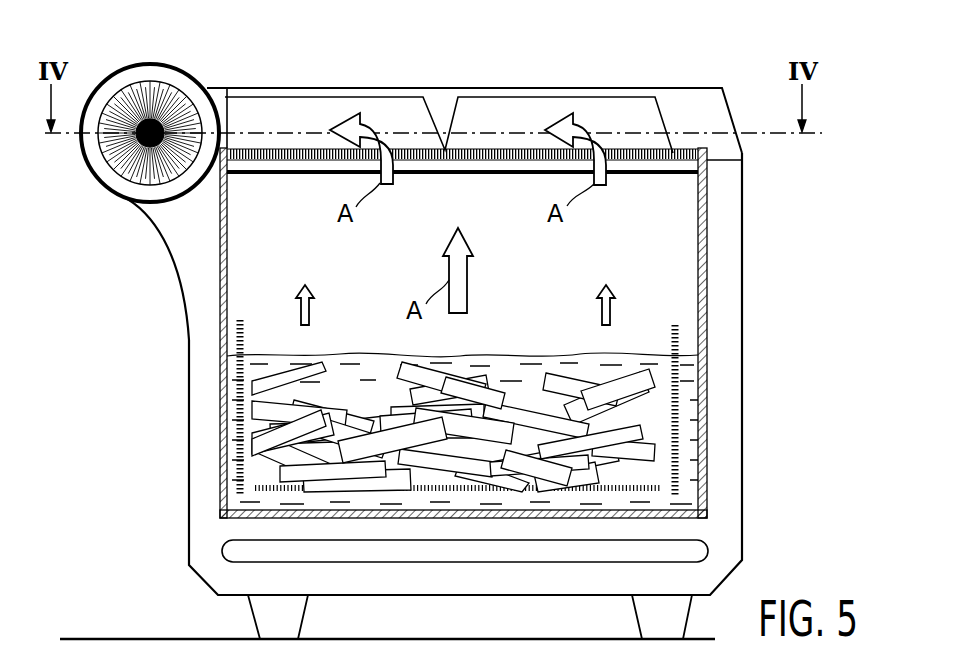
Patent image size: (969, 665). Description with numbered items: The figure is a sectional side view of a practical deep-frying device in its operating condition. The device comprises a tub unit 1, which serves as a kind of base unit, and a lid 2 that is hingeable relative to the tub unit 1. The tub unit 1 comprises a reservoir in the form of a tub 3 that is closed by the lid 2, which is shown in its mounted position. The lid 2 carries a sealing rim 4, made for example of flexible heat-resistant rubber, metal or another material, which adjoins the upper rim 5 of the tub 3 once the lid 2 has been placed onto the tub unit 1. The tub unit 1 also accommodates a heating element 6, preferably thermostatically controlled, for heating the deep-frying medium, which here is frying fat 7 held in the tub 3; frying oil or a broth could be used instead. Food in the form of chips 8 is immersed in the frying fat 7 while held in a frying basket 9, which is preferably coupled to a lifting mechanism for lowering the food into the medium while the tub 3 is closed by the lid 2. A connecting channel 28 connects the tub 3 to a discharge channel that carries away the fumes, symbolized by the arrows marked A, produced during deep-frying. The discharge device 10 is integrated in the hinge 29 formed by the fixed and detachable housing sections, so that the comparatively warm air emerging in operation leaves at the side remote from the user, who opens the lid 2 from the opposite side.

The tub unit 1 is at (760, 330).
The lid 2 is at (747, 71).
The tub 3 is at (707, 262).
The sealing rim 4 is at (511, 175).
The upper rim 5 is at (493, 167).
The heating element 6 is at (226, 552).
The frying fat 7 is at (630, 363).
The chips 8 is at (511, 357).
The frying basket 9 is at (244, 330).
The discharge device 10 is at (349, 88).
The connecting channel 28 is at (285, 97).
The hinge 29 is at (637, 170).